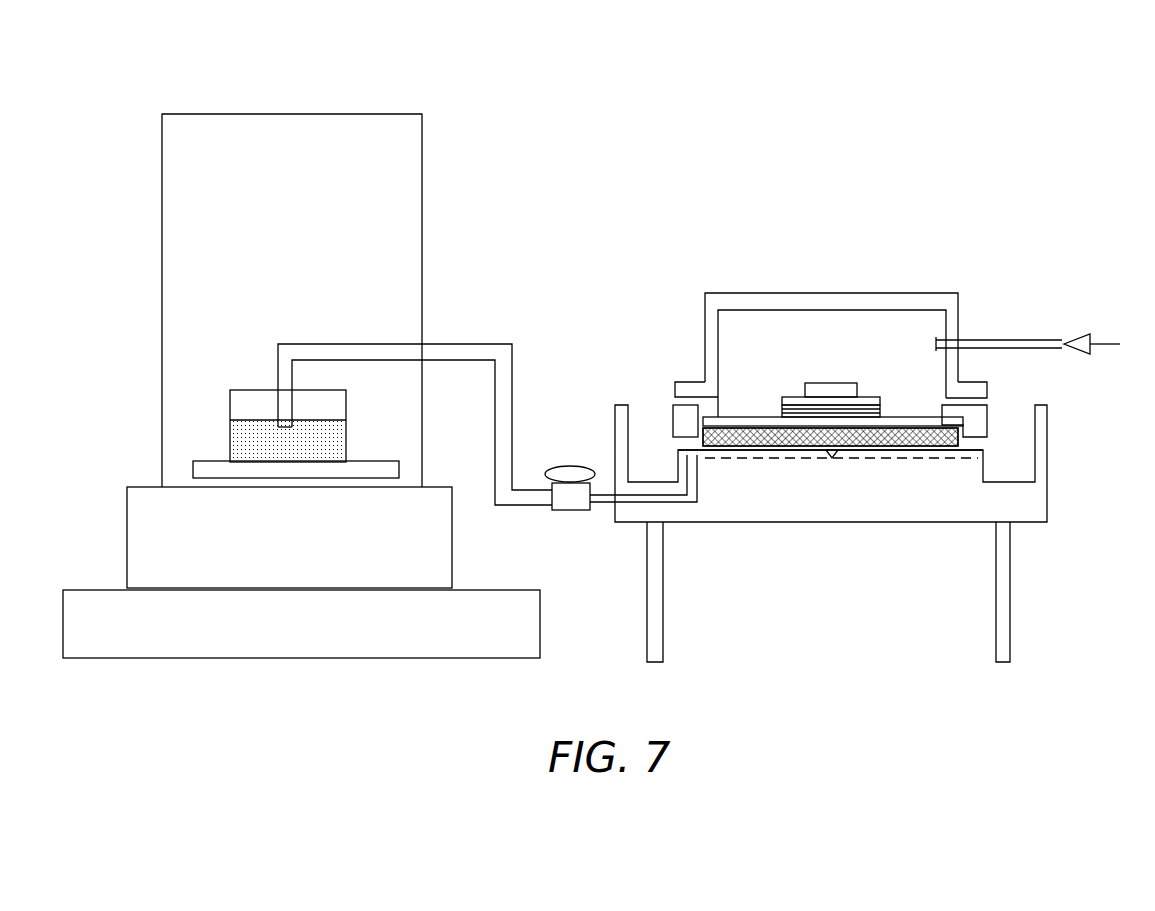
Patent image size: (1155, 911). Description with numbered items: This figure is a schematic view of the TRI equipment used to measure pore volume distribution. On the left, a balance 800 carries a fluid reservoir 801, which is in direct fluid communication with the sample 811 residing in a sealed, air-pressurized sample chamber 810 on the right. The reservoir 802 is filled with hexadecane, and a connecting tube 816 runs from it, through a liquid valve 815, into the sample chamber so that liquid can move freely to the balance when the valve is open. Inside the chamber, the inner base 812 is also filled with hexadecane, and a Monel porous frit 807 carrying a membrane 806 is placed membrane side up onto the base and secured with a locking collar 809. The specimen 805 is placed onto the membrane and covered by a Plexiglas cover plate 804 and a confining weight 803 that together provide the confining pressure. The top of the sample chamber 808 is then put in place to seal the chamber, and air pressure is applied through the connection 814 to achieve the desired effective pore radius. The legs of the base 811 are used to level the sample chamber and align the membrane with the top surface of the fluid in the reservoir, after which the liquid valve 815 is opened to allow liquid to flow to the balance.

The balance 800 is at (345, 345).
The fluid reservoir 801 is at (843, 373).
The reservoir 802 is at (216, 431).
The confining weight 803 is at (832, 372).
The cover plate 804 is at (792, 385).
The specimen 805 is at (768, 408).
The membrane 806 is at (745, 408).
The porous frit 807 is at (701, 418).
The top of the sample chamber 808 is at (890, 276).
The locking collar 809 is at (1000, 416).
The sample chamber 810 is at (809, 534).
The sample 811 is at (976, 640).
The inner base 812 is at (900, 470).
The connection 814 is at (1028, 322).
The liquid valve 815 is at (579, 522).
The connecting tube 816 is at (456, 331).